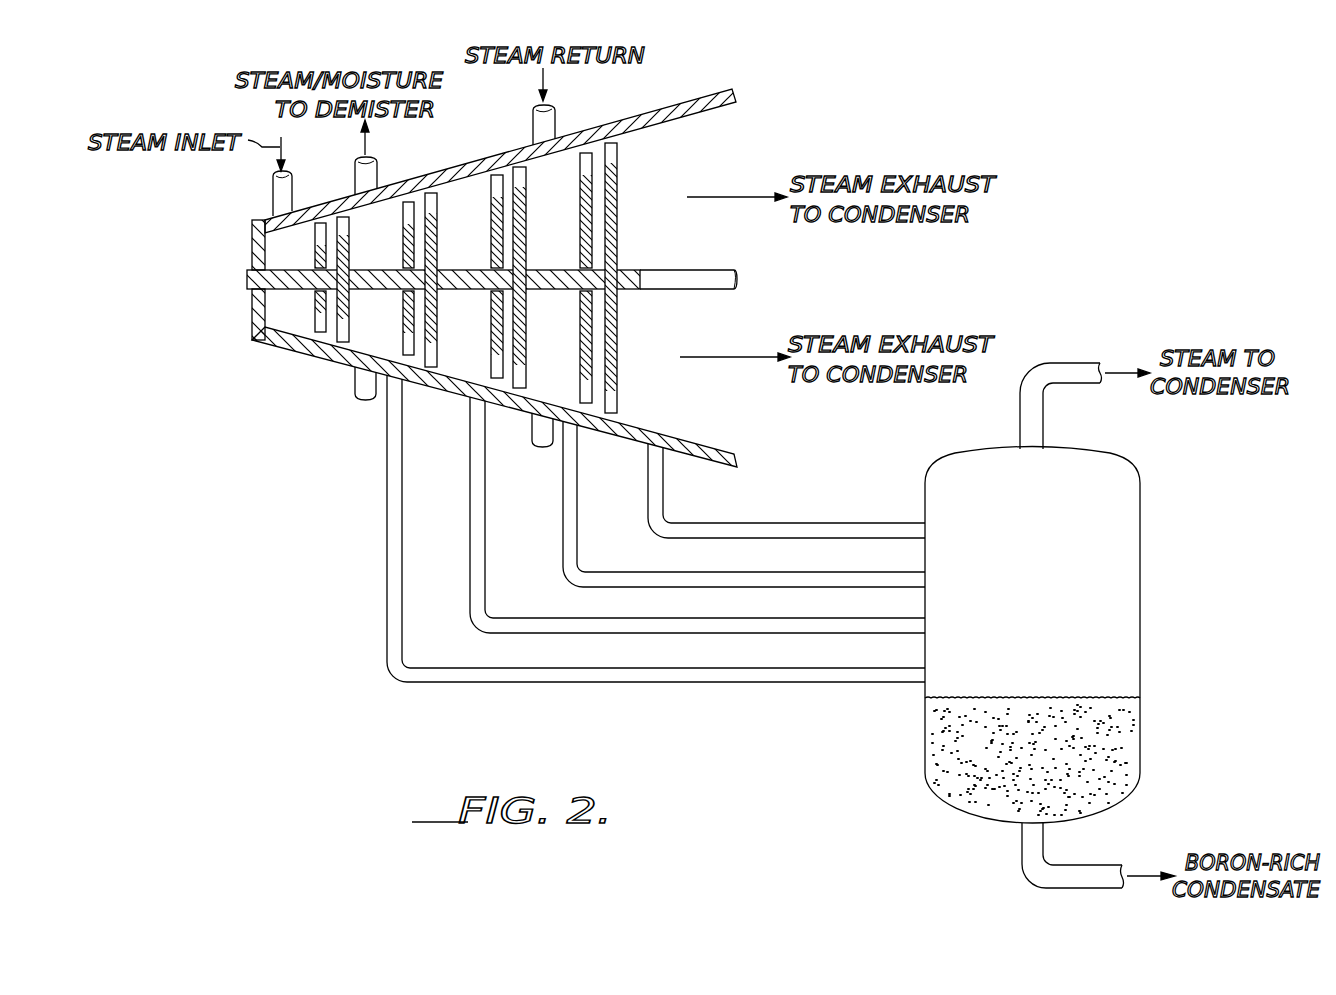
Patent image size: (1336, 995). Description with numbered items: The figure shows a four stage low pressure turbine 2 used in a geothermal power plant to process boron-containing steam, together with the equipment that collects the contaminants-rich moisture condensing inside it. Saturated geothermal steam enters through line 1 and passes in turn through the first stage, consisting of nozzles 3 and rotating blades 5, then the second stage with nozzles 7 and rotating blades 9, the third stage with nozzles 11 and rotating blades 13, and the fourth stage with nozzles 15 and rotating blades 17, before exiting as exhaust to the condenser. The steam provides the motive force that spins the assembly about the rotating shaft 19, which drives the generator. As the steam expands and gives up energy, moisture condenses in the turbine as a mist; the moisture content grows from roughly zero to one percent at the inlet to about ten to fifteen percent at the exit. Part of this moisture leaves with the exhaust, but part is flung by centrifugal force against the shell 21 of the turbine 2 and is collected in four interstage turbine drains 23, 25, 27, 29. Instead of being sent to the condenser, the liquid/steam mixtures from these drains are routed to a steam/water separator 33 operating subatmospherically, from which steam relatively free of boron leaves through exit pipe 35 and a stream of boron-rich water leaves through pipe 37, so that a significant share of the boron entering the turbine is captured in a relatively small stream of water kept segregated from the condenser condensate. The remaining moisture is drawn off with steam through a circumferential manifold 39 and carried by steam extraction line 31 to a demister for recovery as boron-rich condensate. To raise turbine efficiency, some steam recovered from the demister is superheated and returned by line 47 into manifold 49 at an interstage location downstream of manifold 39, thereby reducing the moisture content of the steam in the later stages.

The line 1 is at (273, 186).
The turbine 2 is at (210, 106).
The nozzles 3 is at (315, 229).
The rotating blades 5 is at (349, 229).
The nozzles 7 is at (403, 208).
The rotating blades 9 is at (437, 200).
The nozzles 11 is at (491, 185).
The rotating blades 13 is at (526, 180).
The nozzles 15 is at (580, 165).
The rotating blades 17 is at (617, 158).
The rotating shaft 19 is at (665, 268).
The shell 21 is at (702, 110).
The turbine drain 23 is at (387, 477).
The turbine drain 25 is at (470, 490).
The turbine drain 27 is at (563, 495).
The turbine drain 29 is at (648, 490).
The steam extraction line 31 is at (363, 147).
The steam/water separator 33 is at (1140, 615).
The exit pipe 35 is at (1079, 386).
The pipe 37 is at (1078, 865).
The circumferential manifold 39 is at (377, 168).
The line 47 is at (547, 83).
The manifold 49 is at (555, 122).